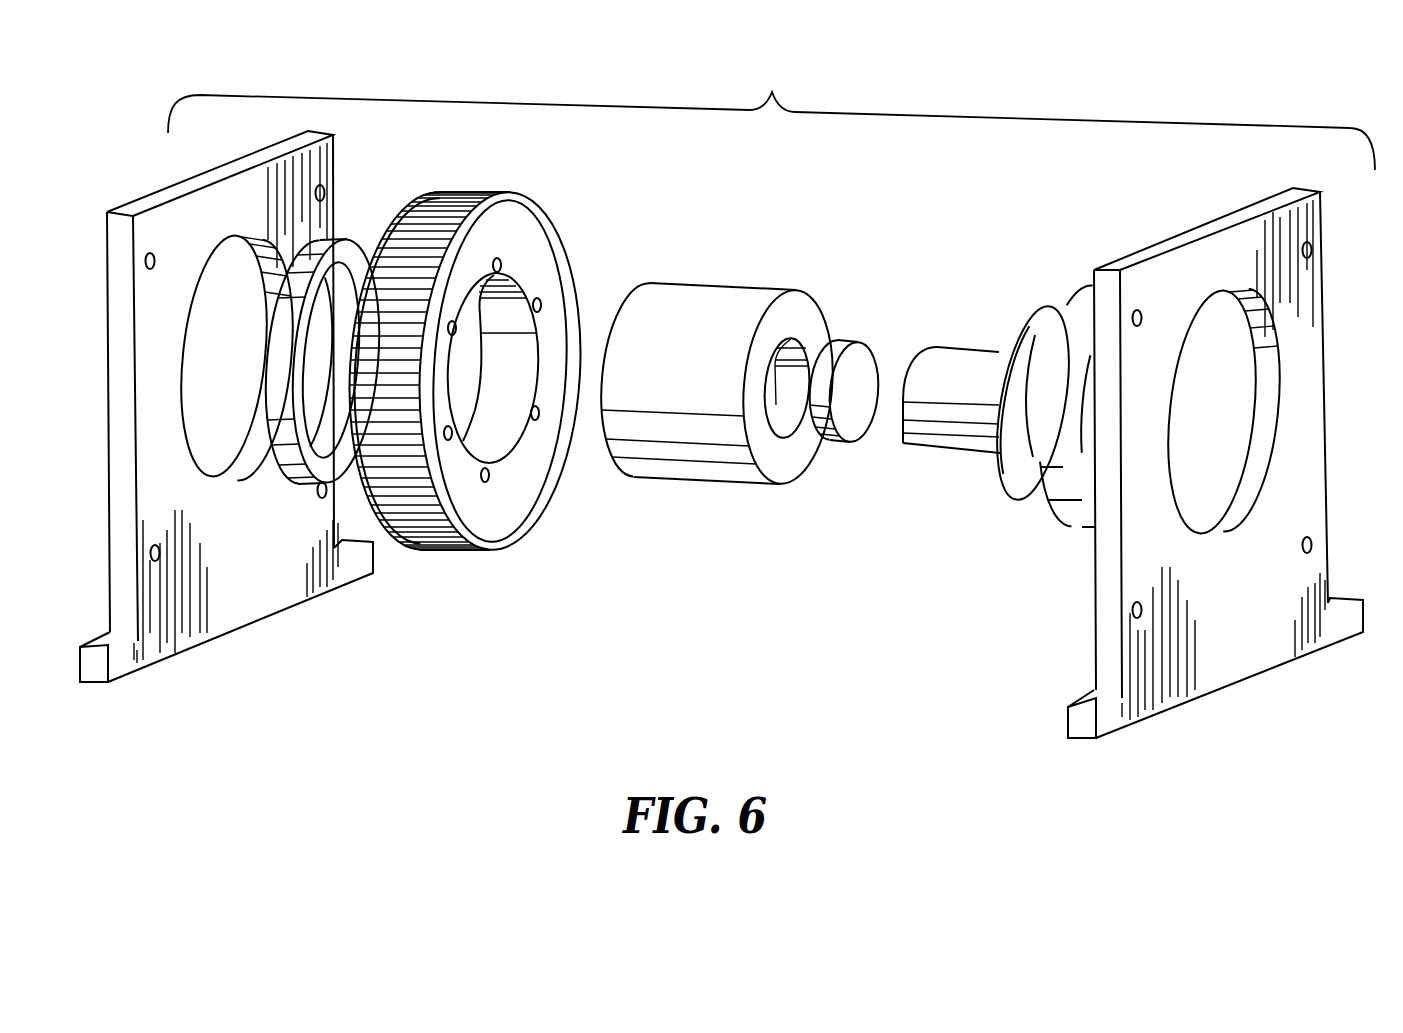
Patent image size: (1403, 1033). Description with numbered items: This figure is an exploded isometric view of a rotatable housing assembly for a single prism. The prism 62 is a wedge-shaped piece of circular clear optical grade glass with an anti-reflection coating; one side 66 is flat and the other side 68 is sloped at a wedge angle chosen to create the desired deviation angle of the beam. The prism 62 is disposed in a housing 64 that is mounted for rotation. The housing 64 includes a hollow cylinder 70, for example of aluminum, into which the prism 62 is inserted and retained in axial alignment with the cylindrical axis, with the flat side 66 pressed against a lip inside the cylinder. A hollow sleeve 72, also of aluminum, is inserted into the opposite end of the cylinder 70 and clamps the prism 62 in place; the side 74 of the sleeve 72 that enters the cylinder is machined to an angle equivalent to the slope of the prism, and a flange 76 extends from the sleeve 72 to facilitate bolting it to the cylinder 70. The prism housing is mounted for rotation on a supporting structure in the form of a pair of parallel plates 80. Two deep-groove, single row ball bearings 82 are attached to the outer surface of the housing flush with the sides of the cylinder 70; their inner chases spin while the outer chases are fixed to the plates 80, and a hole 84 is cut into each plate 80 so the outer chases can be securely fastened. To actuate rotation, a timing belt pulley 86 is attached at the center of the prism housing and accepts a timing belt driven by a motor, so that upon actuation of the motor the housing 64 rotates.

The prism 62 is at (866, 404).
The housing 64 is at (662, 656).
The flat side 66 is at (816, 334).
The sloped side 68 is at (870, 363).
The hollow cylinder 70 is at (715, 460).
The hollow sleeve 72 is at (929, 448).
The sleeve side 74 is at (900, 427).
The flange 76 is at (1033, 337).
The parallel plates 80 is at (720, 436).
The ball bearings 82 is at (360, 252).
The hole 84 is at (207, 365).
The timing belt pulley 86 is at (470, 557).